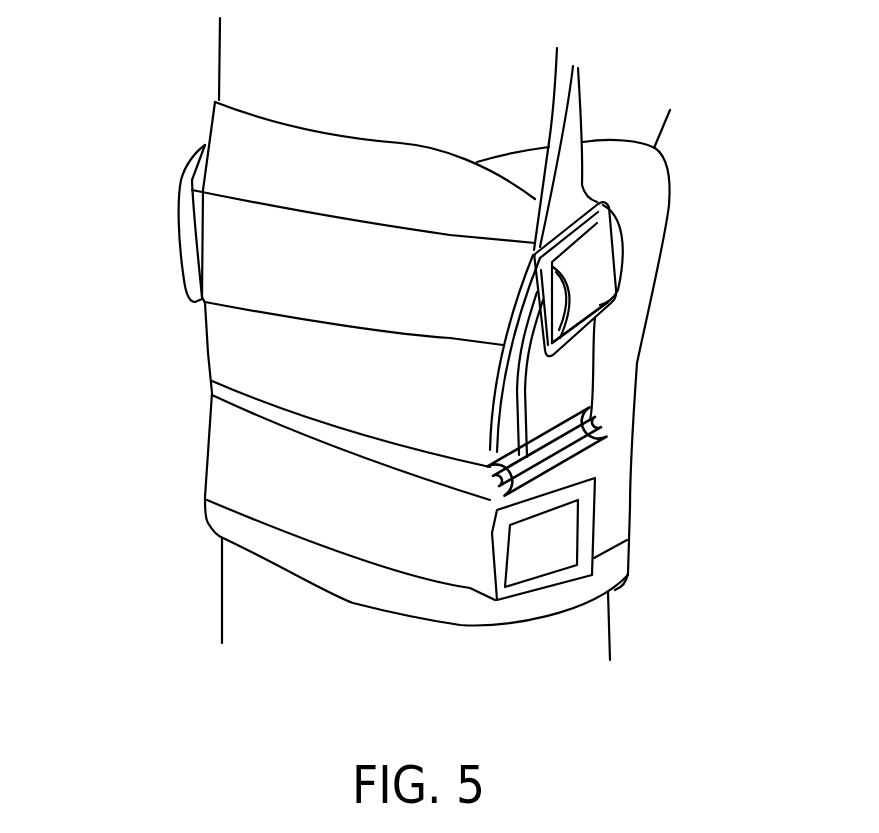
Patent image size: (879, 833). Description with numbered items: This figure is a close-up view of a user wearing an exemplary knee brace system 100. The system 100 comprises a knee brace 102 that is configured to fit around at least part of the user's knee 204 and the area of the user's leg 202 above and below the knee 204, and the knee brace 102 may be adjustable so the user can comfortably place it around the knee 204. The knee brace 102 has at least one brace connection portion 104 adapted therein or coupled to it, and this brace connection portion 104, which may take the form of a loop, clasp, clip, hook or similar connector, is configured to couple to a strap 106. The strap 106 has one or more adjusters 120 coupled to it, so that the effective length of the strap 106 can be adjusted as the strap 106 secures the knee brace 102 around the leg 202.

The system 100 is at (168, 425).
The knee brace 102 is at (247, 255).
The brace connection portion 104 is at (580, 458).
The strap 106 is at (570, 387).
The adjuster 120 is at (597, 225).
The leg 202 is at (285, 78).
The knee 204 is at (238, 353).